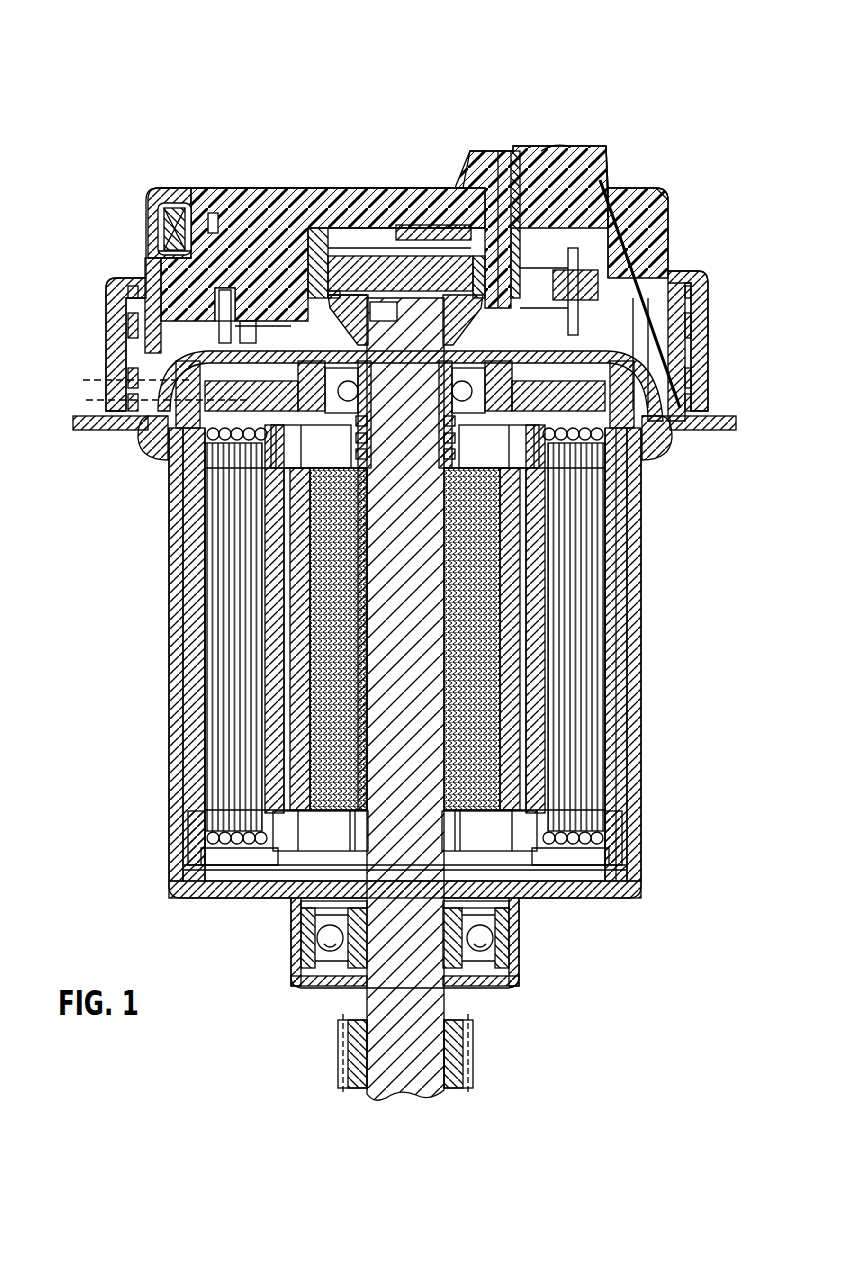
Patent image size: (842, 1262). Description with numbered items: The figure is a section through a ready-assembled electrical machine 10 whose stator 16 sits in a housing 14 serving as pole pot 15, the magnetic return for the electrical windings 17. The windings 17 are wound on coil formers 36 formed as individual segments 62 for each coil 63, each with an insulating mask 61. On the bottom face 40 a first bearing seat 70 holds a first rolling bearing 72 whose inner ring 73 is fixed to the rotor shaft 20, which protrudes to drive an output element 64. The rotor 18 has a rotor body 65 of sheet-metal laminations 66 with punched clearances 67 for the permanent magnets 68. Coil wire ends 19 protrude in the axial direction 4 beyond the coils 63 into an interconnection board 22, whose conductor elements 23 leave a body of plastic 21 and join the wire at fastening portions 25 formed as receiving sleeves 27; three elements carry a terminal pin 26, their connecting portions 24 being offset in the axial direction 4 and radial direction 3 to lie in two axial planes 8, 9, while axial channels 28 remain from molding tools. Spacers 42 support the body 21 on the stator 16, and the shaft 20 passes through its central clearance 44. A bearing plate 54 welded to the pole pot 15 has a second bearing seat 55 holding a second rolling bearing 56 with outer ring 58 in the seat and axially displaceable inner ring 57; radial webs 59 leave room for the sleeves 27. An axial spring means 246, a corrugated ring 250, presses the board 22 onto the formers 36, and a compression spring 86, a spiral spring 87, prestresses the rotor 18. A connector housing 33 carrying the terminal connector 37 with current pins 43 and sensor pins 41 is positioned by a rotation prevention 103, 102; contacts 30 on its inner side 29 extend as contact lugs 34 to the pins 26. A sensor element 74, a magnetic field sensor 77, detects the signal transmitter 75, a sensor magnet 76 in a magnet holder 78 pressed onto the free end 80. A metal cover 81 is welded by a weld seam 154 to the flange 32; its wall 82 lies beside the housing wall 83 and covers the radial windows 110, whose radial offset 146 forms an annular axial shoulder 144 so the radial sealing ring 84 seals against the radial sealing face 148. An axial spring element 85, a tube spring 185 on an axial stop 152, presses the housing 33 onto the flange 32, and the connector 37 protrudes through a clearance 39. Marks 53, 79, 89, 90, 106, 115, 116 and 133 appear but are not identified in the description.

The radial direction 3 is at (725, 112).
The axial direction 4 is at (400, 82).
The axial plane 8 is at (78, 392).
The axial plane 9 is at (78, 372).
The electrical machine 10 is at (110, 146).
The housing 14 is at (158, 572).
The pole pot 15 is at (633, 657).
The stator 16 is at (622, 632).
The electrical windings 17 is at (636, 637).
The rotor 18 is at (504, 690).
The coil wire ends 19 is at (674, 298).
The rotor shaft 20 is at (243, 628).
The body of plastic 21 is at (389, 283).
The interconnection board 22 is at (132, 345).
The conductor elements 23 is at (323, 222).
The connecting portions 24 is at (288, 305).
The fastening portions 25 is at (728, 348).
The terminal pins 26 is at (680, 294).
The receiving sleeves 27 is at (666, 330).
The axial channels 28 is at (633, 453).
The inner side 29 is at (490, 180).
The electrical contacts 30 is at (677, 212).
The flange 32 is at (722, 422).
The connector housing 33 is at (310, 240).
The contact lugs 34 is at (598, 205).
The coil formers 36 is at (613, 724).
The terminal connector 37 is at (552, 145).
The clearance 39 is at (205, 215).
The bottom face 40 is at (557, 890).
The sensor pins 41 is at (555, 153).
The spacers 42 is at (160, 470).
The current pins 43 is at (598, 160).
The central clearance 44 is at (358, 478).
The end winding 53 is at (405, 437).
The bearing plate 54 is at (471, 379).
The second bearing seat 55 is at (438, 430).
The second rolling bearing 56 is at (350, 383).
The inner ring 57 is at (335, 370).
The outer ring 58 is at (352, 414).
The radial webs 59 is at (668, 350).
The insulating mask 61 is at (630, 477).
The individual segments 62 is at (610, 748).
The coils 63 is at (582, 620).
The output element 64 is at (350, 1040).
The rotor body 65 is at (226, 639).
The sheet-metal laminations 66 is at (315, 735).
The clearances 67 is at (300, 690).
The permanent magnets 68 is at (297, 665).
The first bearing seat 70 is at (296, 932).
The first rolling bearing 72 is at (473, 934).
The inner ring 73 is at (308, 958).
The sensor element 74 is at (529, 187).
The signal transmitter 75 is at (400, 211).
The sensor magnet 76 is at (372, 250).
The magnetic field sensor 77 is at (529, 187).
The magnet holder 78 is at (325, 218).
The terminal block 79 is at (443, 178).
The free end 80 is at (383, 312).
The metal cover 81 is at (165, 195).
The circumferential wall 82 is at (120, 298).
The circumferential wall 83 is at (612, 200).
The radial sealing ring 84 is at (168, 228).
The axial spring element 85 is at (718, 264).
The compression spring 86 is at (395, 639).
The spiral spring 87 is at (350, 508).
The bead 89 is at (142, 432).
The bead 90 is at (660, 413).
The rotation prevention 102 is at (240, 300).
The rotation prevention 103 is at (215, 300).
The connector cap 106 is at (540, 143).
The radial windows 110 is at (575, 277).
The cover top 115 is at (385, 180).
The terminal pin 116 is at (525, 147).
The connector 133 is at (605, 285).
The annular axial shoulder 144 is at (163, 243).
The radial offset 146 is at (112, 283).
The radial sealing face 148 is at (163, 205).
The axial stop 152 is at (684, 375).
The weld seam 154 is at (98, 420).
The tube spring 185 is at (668, 276).
The axial spring means 246 is at (675, 685).
The corrugated ring 250 is at (592, 497).